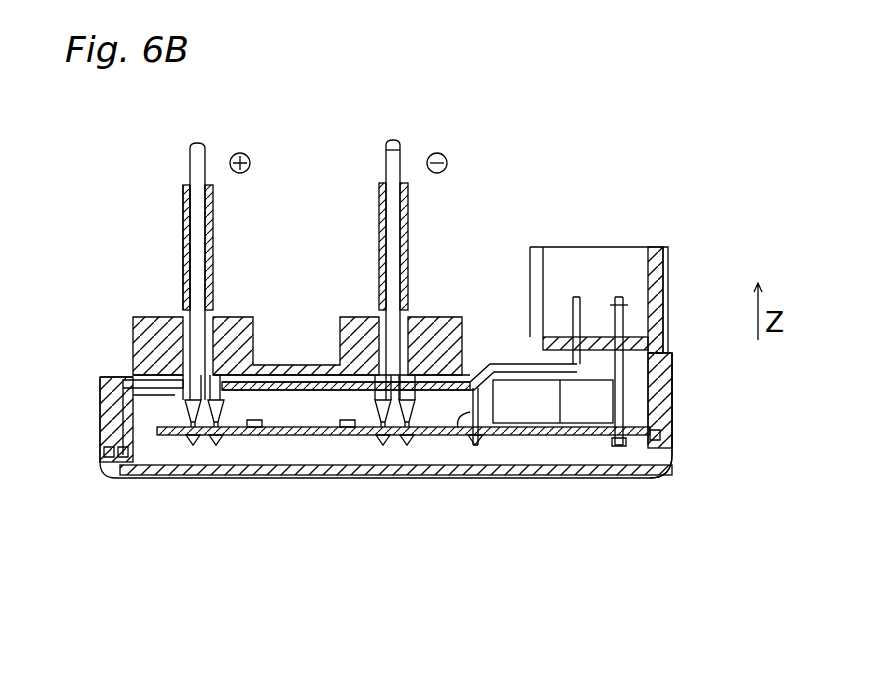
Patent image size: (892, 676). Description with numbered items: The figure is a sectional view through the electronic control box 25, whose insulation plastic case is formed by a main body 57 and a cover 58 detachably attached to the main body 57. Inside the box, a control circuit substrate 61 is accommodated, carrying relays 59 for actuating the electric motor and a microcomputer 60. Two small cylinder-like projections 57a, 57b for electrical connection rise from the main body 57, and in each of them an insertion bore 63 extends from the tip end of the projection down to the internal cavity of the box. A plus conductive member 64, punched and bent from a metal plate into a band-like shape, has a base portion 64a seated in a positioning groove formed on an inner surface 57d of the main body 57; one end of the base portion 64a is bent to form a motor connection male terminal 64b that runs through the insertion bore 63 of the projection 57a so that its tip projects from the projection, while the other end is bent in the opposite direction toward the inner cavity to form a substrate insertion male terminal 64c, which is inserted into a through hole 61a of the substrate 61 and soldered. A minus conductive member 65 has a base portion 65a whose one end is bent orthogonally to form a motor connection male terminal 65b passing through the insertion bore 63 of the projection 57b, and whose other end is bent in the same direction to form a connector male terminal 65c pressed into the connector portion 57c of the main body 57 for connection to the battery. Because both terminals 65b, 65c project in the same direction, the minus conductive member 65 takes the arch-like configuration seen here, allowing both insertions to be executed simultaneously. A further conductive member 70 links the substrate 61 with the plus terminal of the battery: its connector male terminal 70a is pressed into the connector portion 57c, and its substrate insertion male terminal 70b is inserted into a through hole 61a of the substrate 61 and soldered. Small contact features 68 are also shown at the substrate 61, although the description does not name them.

The electronic control box 25 is at (672, 197).
The main body 57 is at (668, 380).
The projection 57a is at (185, 255).
The projection 57b is at (408, 238).
The connector portion 57c is at (665, 275).
The inner surface 57d is at (165, 408).
The cover 58 is at (657, 470).
The relay 59 is at (543, 410).
The microcomputer 60 is at (257, 440).
The control circuit substrate 61 is at (150, 420).
The through hole 61a is at (240, 440).
The insertion bore 63 is at (188, 218).
The plus conductive member 64 is at (220, 182).
The base portion 64a is at (292, 365).
The motor connection male terminal 64b is at (208, 245).
The substrate insertion male terminal 64c is at (457, 443).
The minus conductive member 65 is at (374, 158).
The base portion 65a is at (490, 372).
The motor connection male terminal 65b is at (393, 167).
The connector male terminal 65c is at (573, 312).
The contact tip 68 is at (175, 440).
The conductive member 70 is at (655, 395).
The connector male terminal 70a is at (615, 310).
The substrate insertion male terminal 70b is at (622, 447).